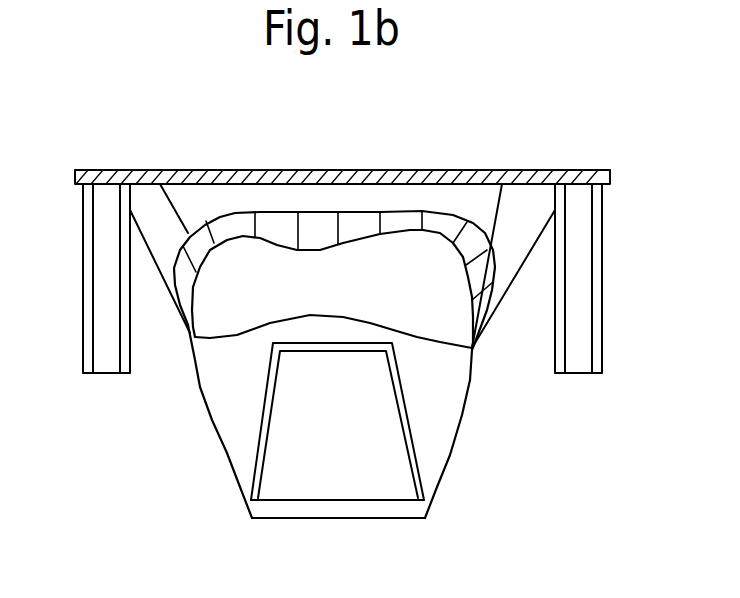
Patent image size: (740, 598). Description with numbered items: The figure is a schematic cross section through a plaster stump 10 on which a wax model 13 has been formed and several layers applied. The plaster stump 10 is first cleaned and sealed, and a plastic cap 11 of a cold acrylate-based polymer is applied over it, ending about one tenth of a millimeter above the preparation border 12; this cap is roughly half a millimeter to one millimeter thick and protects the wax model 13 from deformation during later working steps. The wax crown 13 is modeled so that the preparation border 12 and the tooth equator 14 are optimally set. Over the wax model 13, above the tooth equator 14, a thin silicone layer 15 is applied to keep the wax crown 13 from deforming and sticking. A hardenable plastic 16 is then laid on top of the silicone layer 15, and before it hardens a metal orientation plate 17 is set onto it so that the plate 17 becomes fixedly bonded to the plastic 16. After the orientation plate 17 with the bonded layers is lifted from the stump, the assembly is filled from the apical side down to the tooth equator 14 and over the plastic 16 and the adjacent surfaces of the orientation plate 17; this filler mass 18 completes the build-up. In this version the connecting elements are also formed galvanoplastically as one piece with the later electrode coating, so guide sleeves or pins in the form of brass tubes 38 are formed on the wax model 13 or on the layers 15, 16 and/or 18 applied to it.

The plaster stump 10 is at (322, 465).
The plastic cap 11 is at (257, 475).
The preparation border 12 is at (425, 518).
The wax model 13 is at (438, 410).
The tooth equator 14 is at (250, 337).
The silicone layer 15 is at (480, 278).
The hardenable plastic 16 is at (477, 200).
The orientation plate 17 is at (452, 172).
The filler mass 18 is at (142, 207).
The brass tubes 38 is at (88, 288).